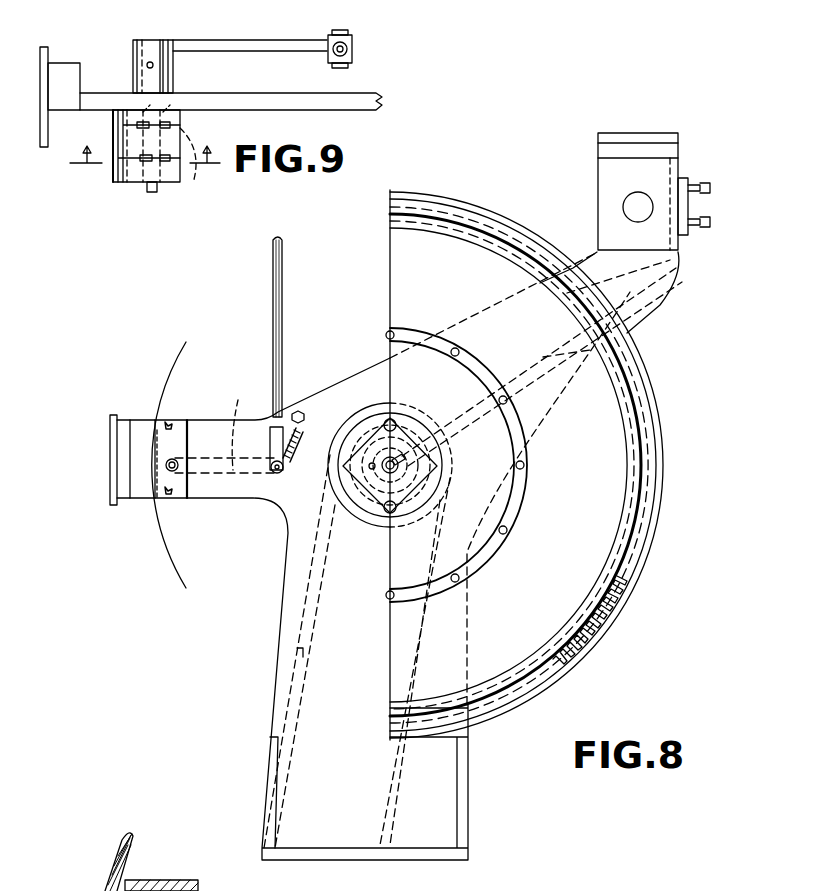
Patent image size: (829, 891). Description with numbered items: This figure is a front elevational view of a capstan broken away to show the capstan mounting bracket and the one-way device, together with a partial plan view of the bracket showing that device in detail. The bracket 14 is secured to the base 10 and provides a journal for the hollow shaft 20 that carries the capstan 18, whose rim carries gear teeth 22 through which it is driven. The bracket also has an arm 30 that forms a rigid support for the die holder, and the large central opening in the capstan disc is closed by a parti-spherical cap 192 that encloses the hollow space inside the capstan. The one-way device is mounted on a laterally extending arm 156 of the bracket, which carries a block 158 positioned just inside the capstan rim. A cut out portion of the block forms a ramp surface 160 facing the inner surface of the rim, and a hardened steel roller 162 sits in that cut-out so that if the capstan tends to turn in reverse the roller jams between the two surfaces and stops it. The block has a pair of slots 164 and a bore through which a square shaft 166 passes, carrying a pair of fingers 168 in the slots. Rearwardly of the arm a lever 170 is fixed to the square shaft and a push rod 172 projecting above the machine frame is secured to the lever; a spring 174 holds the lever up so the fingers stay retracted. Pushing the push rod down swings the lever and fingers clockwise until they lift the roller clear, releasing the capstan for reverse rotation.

In FIG. 9, the base 10 is at (143, 145).
In FIG. 8, the bracket 14 is at (315, 620).
In FIG. 8, the capstan 18 is at (607, 525).
In FIG. 8, the shaft 20 is at (362, 500).
In FIG. 8, the gear teeth 22 is at (610, 640).
In FIG. 8, the arm 30 is at (642, 315).
In FIG. 8, the laterally extending arm 156 is at (222, 490).
In FIG. 9, the block 158 is at (135, 170).
In FIG. 8, the block 158 is at (183, 497).
In FIG. 8, the ramp surface 160 is at (157, 445).
In FIG. 9, the roller 162 is at (113, 172).
In FIG. 8, the roller 162 is at (157, 467).
In FIG. 9, the slot 164 is at (206, 163).
In FIG. 9, the square shaft 166 is at (150, 193).
In FIG. 9, the finger 168 is at (163, 110).
In FIG. 8, the finger 168 is at (153, 497).
In FIG. 9, the lever 170 is at (249, 46).
In FIG. 8, the lever 170 is at (225, 427).
In FIG. 9, the push rod 172 is at (355, 47).
In FIG. 8, the push rod 172 is at (283, 318).
In FIG. 8, the spring 174 is at (302, 438).
In FIG. 8, the parti-spherical cap 192 is at (495, 510).